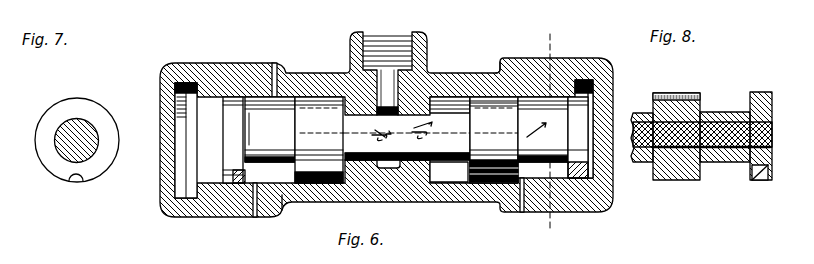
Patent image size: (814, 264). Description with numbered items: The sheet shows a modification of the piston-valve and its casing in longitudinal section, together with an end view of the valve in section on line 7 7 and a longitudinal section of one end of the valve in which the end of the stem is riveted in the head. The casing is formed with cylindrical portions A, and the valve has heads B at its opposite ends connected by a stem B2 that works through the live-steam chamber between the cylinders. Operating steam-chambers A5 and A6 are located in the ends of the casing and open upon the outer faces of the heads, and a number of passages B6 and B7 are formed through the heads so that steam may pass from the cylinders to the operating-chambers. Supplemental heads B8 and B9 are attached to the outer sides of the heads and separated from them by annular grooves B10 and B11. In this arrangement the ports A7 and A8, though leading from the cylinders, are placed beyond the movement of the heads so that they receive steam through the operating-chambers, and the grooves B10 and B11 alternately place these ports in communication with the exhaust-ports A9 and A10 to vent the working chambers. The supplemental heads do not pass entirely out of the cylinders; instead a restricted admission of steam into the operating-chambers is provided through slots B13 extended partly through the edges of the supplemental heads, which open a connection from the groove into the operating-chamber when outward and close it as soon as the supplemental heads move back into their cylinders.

In FIG. 6, the cylindrical portion of valve-casing A is at (386, 124).
In FIG. 6, the operating steam-chamber A5 is at (585, 80).
In FIG. 6, the operating steam-chamber A6 is at (185, 83).
In FIG. 6, the port A7 is at (522, 210).
In FIG. 6, the port A8 is at (255, 205).
In FIG. 6, the exhaust vent-port A9 is at (498, 72).
In FIG. 6, the exhaust vent-port A10 is at (275, 68).
In FIG. 6, the valve head B is at (485, 95).
In FIG. 8, the valve head B is at (677, 93).
In FIG. 7, the stem B2 is at (90, 125).
In FIG. 6, the stem B2 is at (450, 95).
In FIG. 8, the stem B2 is at (641, 162).
In FIG. 6, the hole or passage B6 is at (501, 140).
In FIG. 8, the hole or passage B6 is at (653, 100).
In FIG. 6, the hole or passage B7 is at (319, 140).
In FIG. 6, the supplemental head B8 is at (578, 137).
In FIG. 8, the supplemental head B8 is at (758, 92).
In FIG. 6, the supplemental head B9 is at (234, 140).
In FIG. 6, the annular groove or neck B10 is at (544, 129).
In FIG. 8, the annular groove or neck B10 is at (722, 112).
In FIG. 6, the annular groove or neck B11 is at (270, 129).
In FIG. 7, the slot B13 is at (73, 185).
In FIG. 6, the slot B13 is at (236, 183).
In FIG. 8, the slot B13 is at (758, 180).
In FIG. 6, the section line 7 7 is at (550, 136).